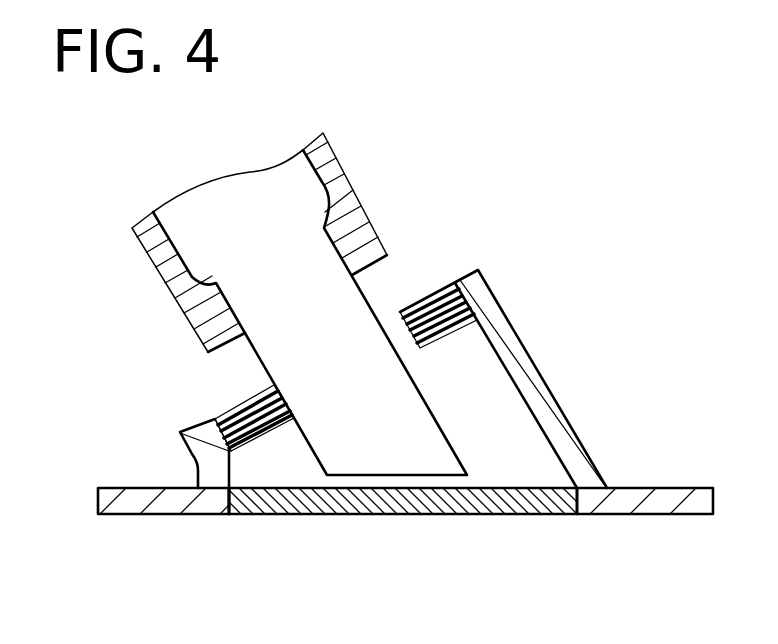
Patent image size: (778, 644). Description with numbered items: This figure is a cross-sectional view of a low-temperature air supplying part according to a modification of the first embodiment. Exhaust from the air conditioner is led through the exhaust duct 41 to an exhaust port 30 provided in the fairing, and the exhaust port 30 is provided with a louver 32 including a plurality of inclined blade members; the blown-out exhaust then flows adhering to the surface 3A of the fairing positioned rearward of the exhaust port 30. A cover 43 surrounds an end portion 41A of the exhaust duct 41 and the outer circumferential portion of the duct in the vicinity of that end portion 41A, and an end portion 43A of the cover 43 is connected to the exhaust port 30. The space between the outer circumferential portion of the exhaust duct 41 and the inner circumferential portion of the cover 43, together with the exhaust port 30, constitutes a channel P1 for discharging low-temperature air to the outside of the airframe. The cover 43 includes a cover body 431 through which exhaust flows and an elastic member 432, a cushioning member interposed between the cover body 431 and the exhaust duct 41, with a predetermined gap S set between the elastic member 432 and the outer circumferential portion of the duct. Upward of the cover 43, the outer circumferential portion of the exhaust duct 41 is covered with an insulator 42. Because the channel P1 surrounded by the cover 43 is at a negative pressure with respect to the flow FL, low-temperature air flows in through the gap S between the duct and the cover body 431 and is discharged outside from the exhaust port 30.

The insulator 42 is at (332, 150).
The exhaust duct 41 is at (322, 458).
The end portion of the exhaust duct 41A is at (460, 458).
The cover 43 is at (545, 180).
The cover body 431 is at (515, 332).
The elastic member 432 is at (425, 299).
The end portion of the cover 43A is at (607, 479).
The exhaust port 30 is at (243, 514).
The louver 32 is at (552, 514).
The surface of the fairing 3A is at (670, 514).
The flow FL is at (390, 306).
The gap S is at (409, 352).
The channel P1 is at (468, 402).